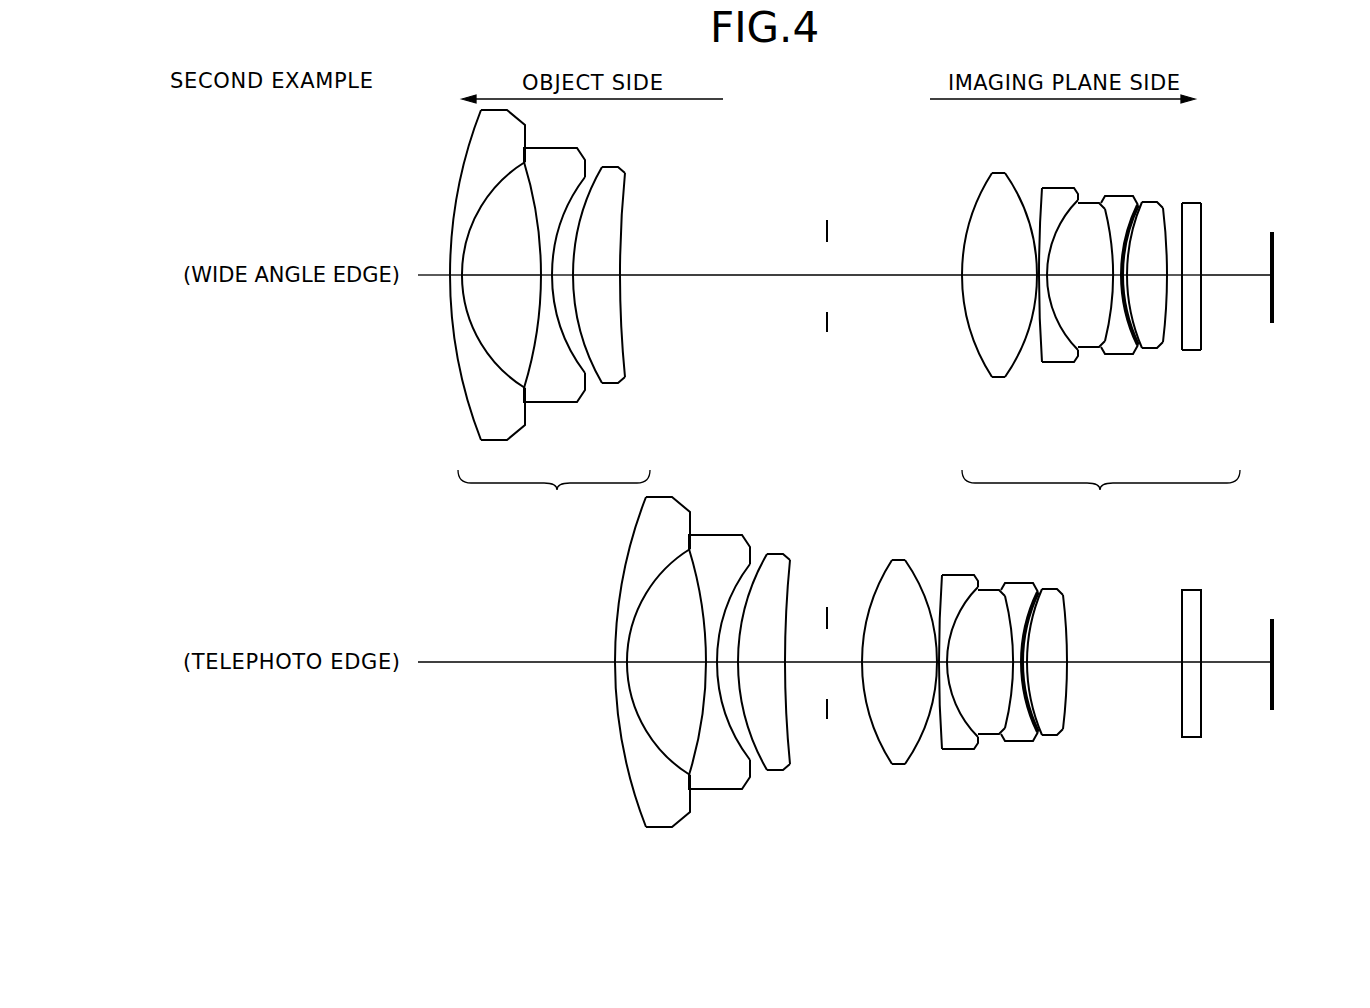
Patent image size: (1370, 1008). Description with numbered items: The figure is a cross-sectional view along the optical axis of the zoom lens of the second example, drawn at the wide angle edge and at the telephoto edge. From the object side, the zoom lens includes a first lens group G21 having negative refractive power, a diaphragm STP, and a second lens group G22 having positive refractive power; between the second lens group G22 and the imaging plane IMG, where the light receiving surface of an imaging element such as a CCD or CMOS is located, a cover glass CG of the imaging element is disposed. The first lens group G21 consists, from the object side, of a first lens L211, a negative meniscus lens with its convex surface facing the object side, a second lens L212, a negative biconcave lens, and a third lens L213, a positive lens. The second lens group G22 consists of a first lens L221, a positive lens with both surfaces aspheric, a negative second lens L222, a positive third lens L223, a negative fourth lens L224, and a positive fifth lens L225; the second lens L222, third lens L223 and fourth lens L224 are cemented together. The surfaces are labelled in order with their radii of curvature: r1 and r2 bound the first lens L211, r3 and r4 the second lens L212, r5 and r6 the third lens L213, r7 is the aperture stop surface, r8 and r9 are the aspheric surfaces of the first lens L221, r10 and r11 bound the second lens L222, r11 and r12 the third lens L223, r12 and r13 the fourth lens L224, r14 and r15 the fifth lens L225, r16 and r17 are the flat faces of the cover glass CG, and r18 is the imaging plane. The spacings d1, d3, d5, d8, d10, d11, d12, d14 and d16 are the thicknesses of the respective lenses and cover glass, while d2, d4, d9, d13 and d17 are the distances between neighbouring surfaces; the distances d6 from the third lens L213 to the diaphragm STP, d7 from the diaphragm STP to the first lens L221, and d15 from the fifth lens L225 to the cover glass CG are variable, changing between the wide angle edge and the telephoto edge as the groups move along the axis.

The radius of curvature of first surface r1 is at (451, 237).
The radius of curvature of second surface r2 is at (479, 207).
The radius of curvature of third surface r3 is at (539, 248).
The radius of curvature of fourth surface r4 is at (561, 217).
The radius of curvature of fifth surface r5 is at (599, 168).
The radius of curvature of sixth surface r6 is at (621, 223).
The aperture stop surface r7 is at (825, 229).
The radius of curvature of eighth surface r8 is at (978, 199).
The radius of curvature of ninth surface r9 is at (1006, 180).
The radius of curvature of tenth surface r10 is at (1041, 200).
The radius of curvature of eleventh surface r11 is at (1069, 198).
The radius of curvature of twelfth surface r12 is at (1107, 210).
The radius of curvature of thirteenth surface r13 is at (1135, 212).
The radius of curvature of fourteenth surface r14 is at (1143, 210).
The radius of curvature of fifteenth surface r15 is at (1167, 210).
The radius of curvature of sixteenth surface r16 is at (1183, 257).
The radius of curvature of seventeenth surface r17 is at (1202, 222).
The imaging plane surface r18 is at (1268, 235).
The thickness of first lens d1 is at (455, 278).
The distance between second and third surfaces d2 is at (500, 278).
The thickness of second lens d3 is at (546, 278).
The distance between fourth and fifth surfaces d4 is at (563, 278).
The thickness of third lens d5 is at (594, 278).
The distance between sixth surface and aperture stop d6 is at (730, 275).
The distance between aperture stop and eighth surface d7 is at (896, 275).
The thickness of first lens of second group d8 is at (998, 278).
The distance between ninth and tenth surfaces d9 is at (1037, 278).
The thickness of second lens of second group d10 is at (1040, 278).
The thickness of third lens of second group d11 is at (1080, 278).
The thickness of fourth lens of second group d12 is at (1121, 278).
The distance between thirteenth and fourteenth surfaces d13 is at (1148, 278).
The thickness of fifth lens of second group d14 is at (1160, 278).
The distance between fifteenth and sixteenth surfaces d15 is at (1178, 280).
The thickness of cover glass d16 is at (1190, 278).
The distance between cover glass and imaging plane d17 is at (1250, 278).
The first lens L211 is at (461, 293).
The second lens L212 is at (540, 312).
The third lens L213 is at (620, 300).
The first lens L221 is at (976, 302).
The second lens L222 is at (1059, 314).
The third lens L223 is at (1099, 302).
The fourth lens L224 is at (1137, 302).
The fifth lens L225 is at (1176, 305).
The first lens group G21 is at (615, 530).
The second lens group G22 is at (1043, 528).
The diaphragm STP is at (830, 222).
The cover glass CG is at (1222, 261).
The imaging plane IMG is at (1304, 261).